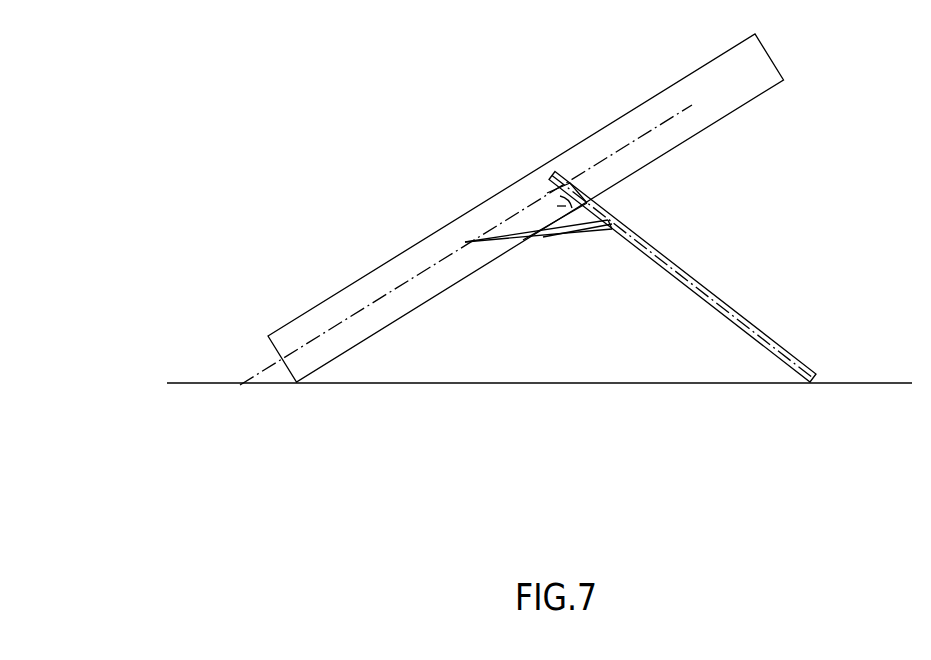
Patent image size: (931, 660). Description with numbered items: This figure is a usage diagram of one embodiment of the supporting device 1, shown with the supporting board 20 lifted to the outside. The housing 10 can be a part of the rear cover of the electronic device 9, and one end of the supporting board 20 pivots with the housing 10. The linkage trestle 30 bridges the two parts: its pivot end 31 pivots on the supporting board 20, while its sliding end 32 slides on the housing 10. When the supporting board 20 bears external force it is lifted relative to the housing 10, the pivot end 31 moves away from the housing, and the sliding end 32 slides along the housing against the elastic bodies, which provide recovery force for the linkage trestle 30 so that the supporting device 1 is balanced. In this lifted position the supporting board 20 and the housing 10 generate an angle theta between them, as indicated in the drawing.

The electronic device 9 is at (113, 56).
The supporting device 1 is at (444, 227).
The housing 10 is at (609, 126).
The supporting board 20 is at (693, 278).
The linkage trestle 30 is at (545, 236).
The pivot end 31 is at (618, 238).
The sliding end 32 is at (462, 256).